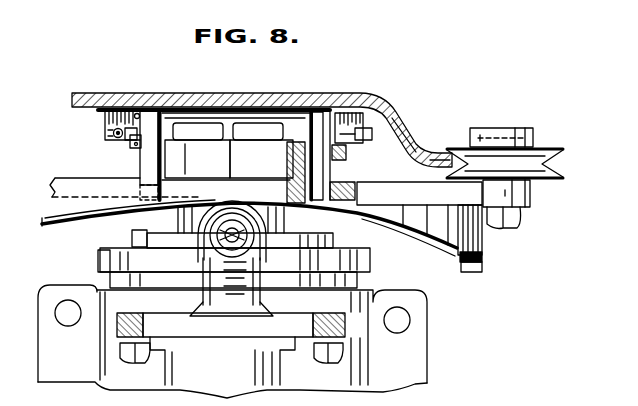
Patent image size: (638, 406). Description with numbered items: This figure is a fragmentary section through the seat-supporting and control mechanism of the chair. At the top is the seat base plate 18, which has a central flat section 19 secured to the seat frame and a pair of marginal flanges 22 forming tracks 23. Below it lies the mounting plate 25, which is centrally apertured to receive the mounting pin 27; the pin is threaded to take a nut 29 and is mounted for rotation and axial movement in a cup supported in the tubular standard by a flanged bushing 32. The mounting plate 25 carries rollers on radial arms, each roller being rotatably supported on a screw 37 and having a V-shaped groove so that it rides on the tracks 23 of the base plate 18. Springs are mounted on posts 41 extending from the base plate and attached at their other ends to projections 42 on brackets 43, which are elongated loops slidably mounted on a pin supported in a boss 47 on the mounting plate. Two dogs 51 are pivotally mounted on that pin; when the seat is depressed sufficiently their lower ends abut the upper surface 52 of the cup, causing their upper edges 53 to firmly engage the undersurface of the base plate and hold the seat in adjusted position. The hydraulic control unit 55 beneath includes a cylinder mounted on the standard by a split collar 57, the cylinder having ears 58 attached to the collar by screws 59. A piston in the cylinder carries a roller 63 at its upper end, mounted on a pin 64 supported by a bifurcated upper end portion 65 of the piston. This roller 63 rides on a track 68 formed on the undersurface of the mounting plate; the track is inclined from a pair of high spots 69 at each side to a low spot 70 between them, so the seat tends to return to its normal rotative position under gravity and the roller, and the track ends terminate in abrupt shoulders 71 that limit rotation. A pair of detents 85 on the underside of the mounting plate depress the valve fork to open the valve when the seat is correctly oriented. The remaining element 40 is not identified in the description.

The seat base plate 18 is at (366, 94).
The central flat section 19 is at (296, 100).
The marginal flanges 22 is at (398, 138).
The tracks 23 is at (440, 151).
The mounting plate 25 is at (533, 197).
The mounting pin 27 is at (300, 220).
The nut 29 is at (185, 128).
The flanged bushing 32 is at (367, 271).
The screws 37 is at (520, 130).
The bolt 40 is at (108, 135).
The posts 41 is at (103, 119).
The projections 42 is at (364, 141).
The brackets 43 is at (131, 147).
The boss 47 is at (292, 104).
The dogs 51 is at (138, 98).
The upper surface of the cup 52 is at (138, 232).
The upper edges of the dogs 53 is at (150, 104).
The hydraulic control unit 55 is at (232, 367).
The split collar 57 is at (407, 367).
The ears 58 is at (343, 332).
The screws 59 is at (129, 360).
The roller 63 is at (203, 202).
The pin 64 is at (213, 247).
The bifurcated upper end portion 65 is at (258, 256).
The track 68 is at (42, 219).
The high spots 69 is at (470, 270).
The low spot 70 is at (258, 200).
The abrupt shoulders 71 is at (480, 262).
The detents 85 is at (242, 205).